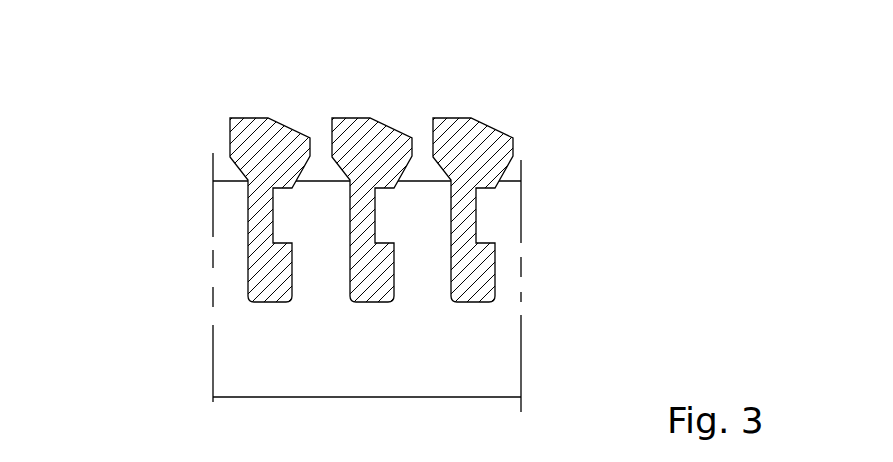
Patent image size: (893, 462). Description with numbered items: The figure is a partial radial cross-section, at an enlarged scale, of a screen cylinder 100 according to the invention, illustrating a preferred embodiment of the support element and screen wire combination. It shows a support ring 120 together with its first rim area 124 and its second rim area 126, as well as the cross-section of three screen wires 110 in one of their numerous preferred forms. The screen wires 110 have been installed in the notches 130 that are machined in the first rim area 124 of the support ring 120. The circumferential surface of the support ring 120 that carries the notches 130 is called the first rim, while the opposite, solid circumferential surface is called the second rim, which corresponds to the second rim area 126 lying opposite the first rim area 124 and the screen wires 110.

The screen cylinder 100 is at (437, 219).
The screen wires 110 is at (467, 130).
The support ring 120 is at (408, 373).
The first rim area 124 is at (232, 208).
The second rim area 126 is at (240, 378).
The notches 130 is at (382, 302).